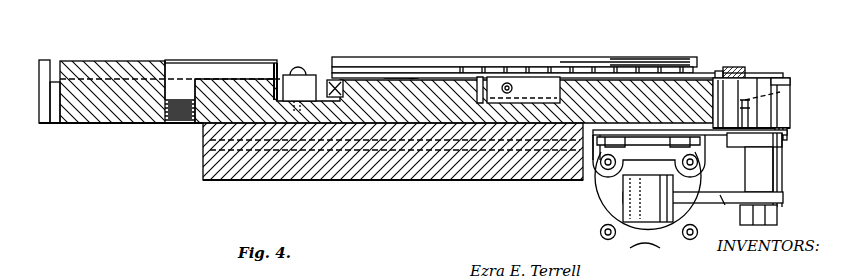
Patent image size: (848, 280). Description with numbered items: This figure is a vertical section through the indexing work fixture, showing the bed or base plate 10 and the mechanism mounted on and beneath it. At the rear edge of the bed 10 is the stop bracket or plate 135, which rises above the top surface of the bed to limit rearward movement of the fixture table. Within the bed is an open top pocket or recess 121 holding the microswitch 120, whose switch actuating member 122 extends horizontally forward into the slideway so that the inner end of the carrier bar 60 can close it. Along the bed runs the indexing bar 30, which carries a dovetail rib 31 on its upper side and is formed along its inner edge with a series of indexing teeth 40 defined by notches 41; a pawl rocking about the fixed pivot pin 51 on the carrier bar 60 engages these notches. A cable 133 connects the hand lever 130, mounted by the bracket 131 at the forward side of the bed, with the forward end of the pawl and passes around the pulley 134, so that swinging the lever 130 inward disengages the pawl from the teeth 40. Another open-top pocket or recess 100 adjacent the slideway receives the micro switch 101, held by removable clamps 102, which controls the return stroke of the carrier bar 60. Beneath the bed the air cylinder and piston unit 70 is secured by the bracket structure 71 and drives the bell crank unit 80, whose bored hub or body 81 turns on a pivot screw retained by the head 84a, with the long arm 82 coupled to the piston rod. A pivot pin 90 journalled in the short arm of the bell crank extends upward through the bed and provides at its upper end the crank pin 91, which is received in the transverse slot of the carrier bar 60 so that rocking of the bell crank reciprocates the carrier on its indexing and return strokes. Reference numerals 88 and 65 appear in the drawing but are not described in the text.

The bed or base plate 10 is at (113, 73).
The stop bracket or plate 135 is at (44, 118).
The open top pocket or recess 121 is at (283, 66).
The microswitch 120 is at (301, 80).
The switch actuating member 122 is at (336, 85).
The pulley 134 is at (393, 68).
The pivot pin 51 is at (452, 68).
The indexing bar 30 is at (480, 63).
The indexing teeth 40 is at (530, 66).
The notches 41 is at (533, 72).
The dovetail rib 31 is at (580, 66).
The cable 133 is at (683, 55).
The open-top pocket or recess 100 is at (568, 77).
The micro switch 101 is at (513, 92).
The hand lever 130 is at (735, 66).
The bracket 131 is at (720, 70).
The crank pin 91 is at (746, 92).
The removable clamps 102 is at (778, 80).
The pivot pin 90 is at (785, 85).
The stud 88 is at (785, 135).
The carrier bar 60 is at (701, 183).
The bored hub or body 81 is at (705, 163).
The long arm 82 is at (743, 190).
The bell crank unit 80 is at (760, 180).
The head 84a is at (773, 222).
The air cylinder and piston unit 70 is at (624, 200).
The bracket structure 71 is at (603, 153).
The hub 65 is at (628, 210).